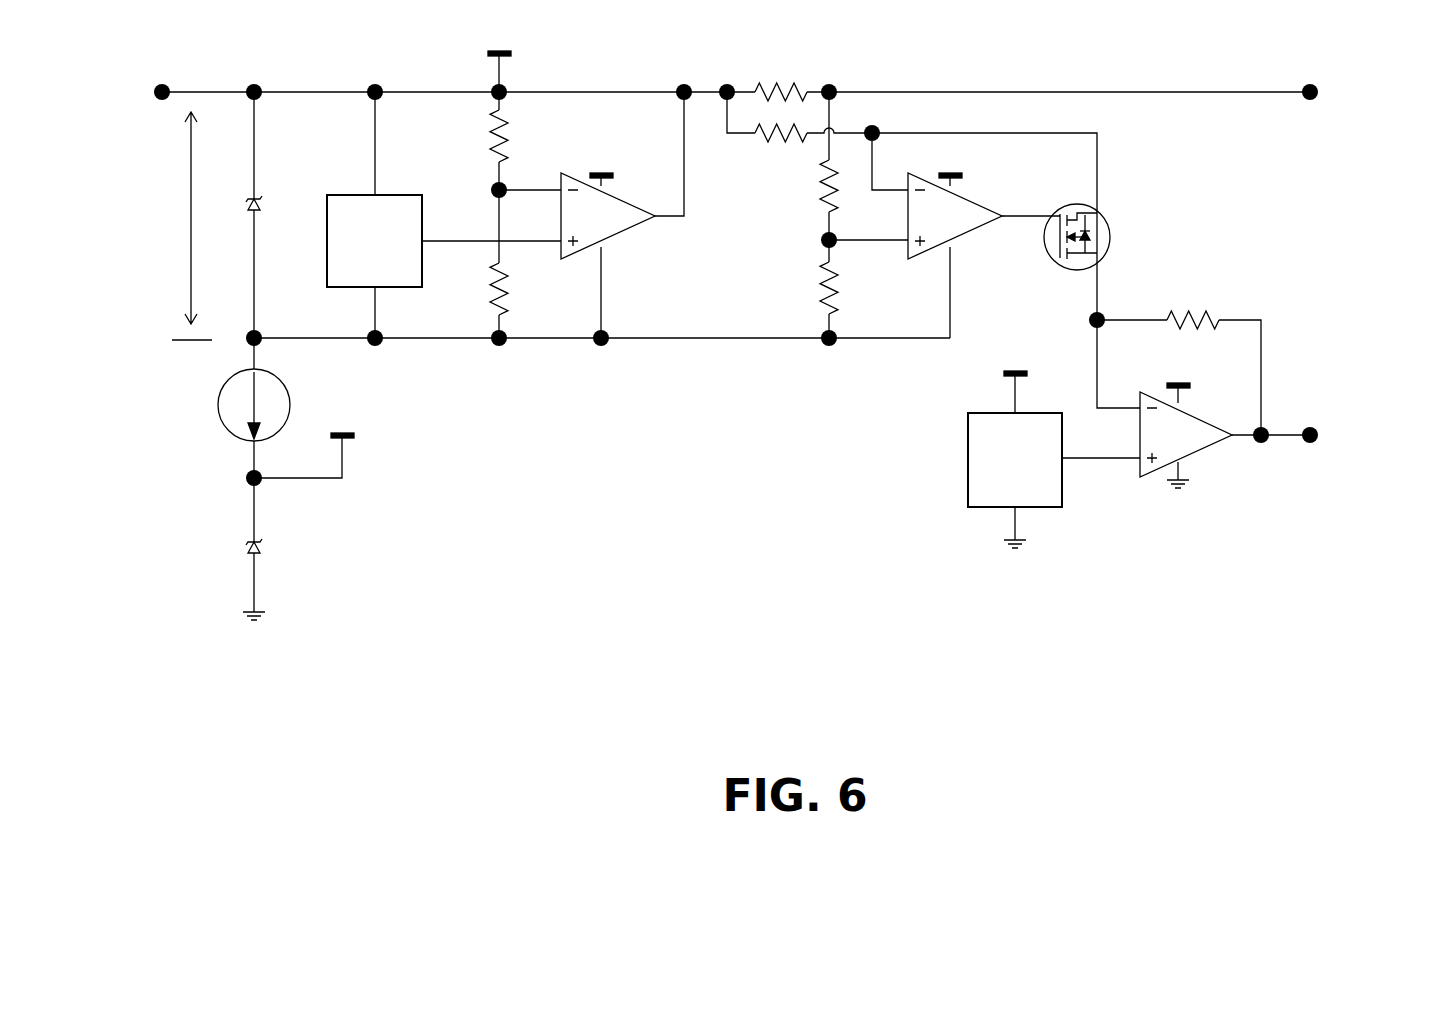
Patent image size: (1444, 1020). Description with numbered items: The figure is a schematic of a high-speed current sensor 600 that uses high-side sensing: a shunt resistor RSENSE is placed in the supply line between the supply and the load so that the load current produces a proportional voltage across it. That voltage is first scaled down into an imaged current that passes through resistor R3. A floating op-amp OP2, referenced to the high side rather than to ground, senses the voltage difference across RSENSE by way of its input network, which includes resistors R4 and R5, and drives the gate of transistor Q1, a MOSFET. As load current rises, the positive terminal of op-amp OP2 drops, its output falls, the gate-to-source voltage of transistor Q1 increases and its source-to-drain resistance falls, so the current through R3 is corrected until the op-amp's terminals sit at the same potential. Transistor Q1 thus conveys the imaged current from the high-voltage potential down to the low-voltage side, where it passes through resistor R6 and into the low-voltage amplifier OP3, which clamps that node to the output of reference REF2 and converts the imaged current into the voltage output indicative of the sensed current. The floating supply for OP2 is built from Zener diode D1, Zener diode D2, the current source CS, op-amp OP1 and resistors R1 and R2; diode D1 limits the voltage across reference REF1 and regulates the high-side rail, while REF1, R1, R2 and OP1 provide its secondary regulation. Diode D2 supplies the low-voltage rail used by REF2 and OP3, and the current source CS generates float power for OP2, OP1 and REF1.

The current sensor 600 is at (751, 439).
The diode D1 is at (274, 206).
The diode D2 is at (274, 554).
The resistor R1 is at (478, 136).
The resistor R2 is at (478, 289).
The resistor R3 is at (779, 149).
The resistor R4 is at (812, 187).
The resistor R5 is at (812, 288).
The resistor R6 is at (1193, 303).
The shunt resistor RSENSE is at (785, 73).
The op-amp OP1 is at (608, 216).
The op-amp OP2 is at (955, 216).
The low-voltage amplifier OP3 is at (1186, 430).
The transistor Q1 is at (1070, 247).
The reference REF1 is at (374, 241).
The reference REF2 is at (1015, 439).
The current source CS is at (198, 407).